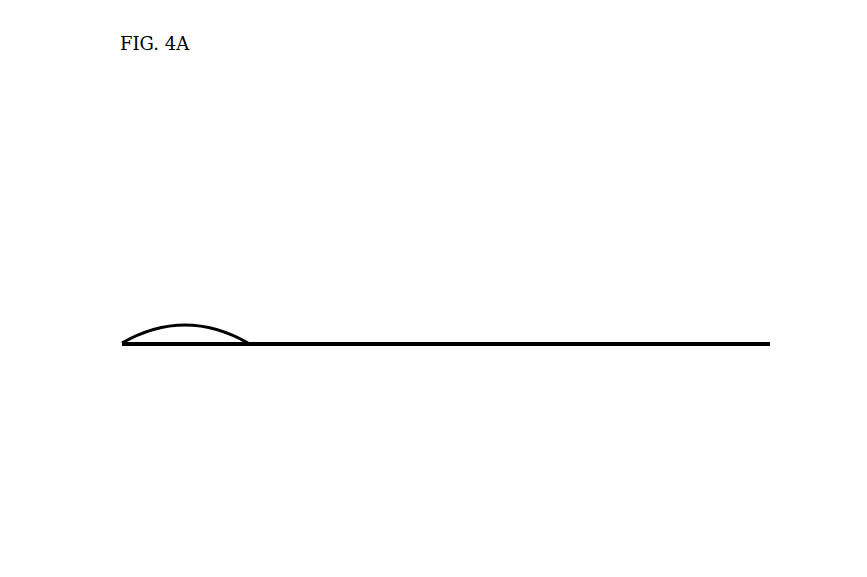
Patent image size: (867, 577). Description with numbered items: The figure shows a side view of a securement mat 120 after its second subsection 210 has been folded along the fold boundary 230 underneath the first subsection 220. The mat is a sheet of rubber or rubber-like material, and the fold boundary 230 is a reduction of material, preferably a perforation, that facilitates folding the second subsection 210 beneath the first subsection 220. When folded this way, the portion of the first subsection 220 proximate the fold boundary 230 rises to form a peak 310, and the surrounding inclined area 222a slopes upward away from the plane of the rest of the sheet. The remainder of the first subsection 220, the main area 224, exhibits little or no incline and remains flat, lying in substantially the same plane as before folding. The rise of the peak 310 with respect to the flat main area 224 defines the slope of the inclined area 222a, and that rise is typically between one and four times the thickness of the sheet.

The securement mat 120 is at (500, 432).
The second subsection 210 is at (238, 357).
The first subsection 220 is at (770, 210).
The inclined area 222a is at (317, 333).
The main area 224 is at (515, 342).
The fold boundary 230 is at (122, 343).
The peak 310 is at (183, 325).